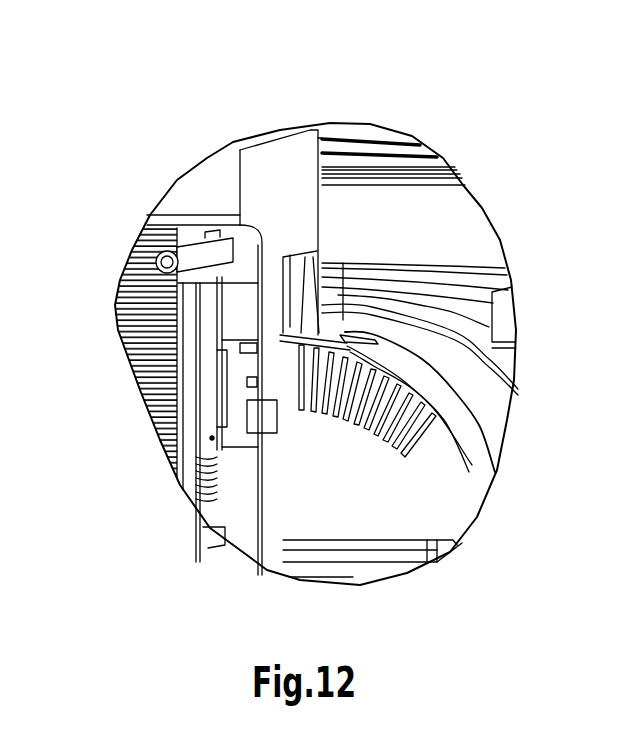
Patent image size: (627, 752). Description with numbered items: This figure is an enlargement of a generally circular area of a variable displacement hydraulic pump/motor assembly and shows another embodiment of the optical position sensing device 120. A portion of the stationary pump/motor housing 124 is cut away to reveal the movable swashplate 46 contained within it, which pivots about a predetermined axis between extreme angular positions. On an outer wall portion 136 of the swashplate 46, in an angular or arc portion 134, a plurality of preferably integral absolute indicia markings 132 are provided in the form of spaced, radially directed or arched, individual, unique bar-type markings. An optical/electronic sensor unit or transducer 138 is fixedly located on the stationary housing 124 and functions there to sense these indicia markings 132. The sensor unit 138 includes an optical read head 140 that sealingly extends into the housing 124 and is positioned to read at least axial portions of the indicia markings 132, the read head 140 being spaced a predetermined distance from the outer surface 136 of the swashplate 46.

The optical position sensing device 120 is at (519, 521).
The stationary pump/motor housing 124 is at (283, 175).
The absolute indicia markings 132 is at (422, 437).
The angular or arc portion 134 is at (333, 428).
The outer wall portion 136 is at (442, 510).
The optical/electronic sensor unit 138 is at (152, 376).
The optical read head 140 is at (273, 388).
The swashplate 46 is at (492, 445).